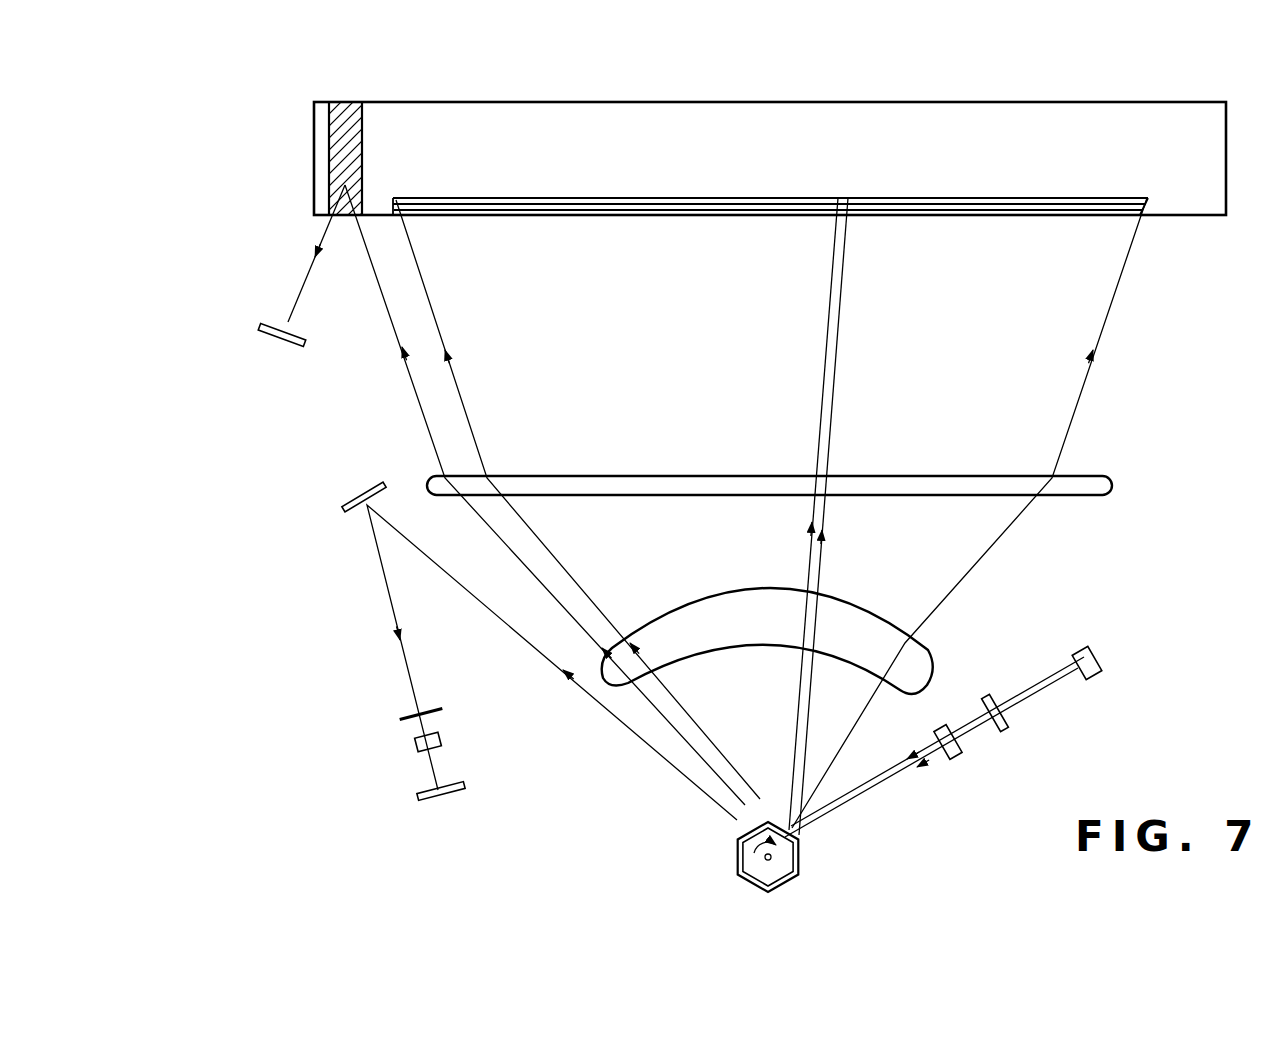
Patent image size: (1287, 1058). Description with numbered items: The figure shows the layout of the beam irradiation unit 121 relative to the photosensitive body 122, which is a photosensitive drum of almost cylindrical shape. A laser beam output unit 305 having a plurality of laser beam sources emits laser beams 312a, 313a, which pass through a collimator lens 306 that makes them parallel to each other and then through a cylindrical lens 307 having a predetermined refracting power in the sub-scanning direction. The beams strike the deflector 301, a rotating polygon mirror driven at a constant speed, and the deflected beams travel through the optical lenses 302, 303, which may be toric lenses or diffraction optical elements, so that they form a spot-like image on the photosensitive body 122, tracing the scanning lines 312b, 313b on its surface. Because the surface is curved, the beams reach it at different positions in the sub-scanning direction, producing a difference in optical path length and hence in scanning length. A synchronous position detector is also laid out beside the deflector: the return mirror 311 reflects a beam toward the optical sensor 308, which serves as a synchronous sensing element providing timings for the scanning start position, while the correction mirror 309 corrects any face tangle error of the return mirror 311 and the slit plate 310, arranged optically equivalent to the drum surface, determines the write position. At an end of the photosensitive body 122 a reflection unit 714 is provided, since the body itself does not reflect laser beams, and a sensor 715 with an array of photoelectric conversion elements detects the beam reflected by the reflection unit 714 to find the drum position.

The beam irradiation unit 121 is at (1160, 477).
The photosensitive body 122 is at (915, 120).
The deflector 301 is at (783, 862).
The optical lens 302 is at (688, 624).
The optical lens 303 is at (936, 475).
The laser beam output unit 305 is at (1100, 655).
The collimator lens 306 is at (1005, 728).
The cylindrical lens 307 is at (957, 758).
The optical sensor 308 is at (465, 797).
The correction mirror 309 is at (441, 740).
The slit plate 310 is at (406, 716).
The return mirror 311 is at (343, 500).
The laser beam 312a is at (833, 293).
The scanning line 312b is at (618, 200).
The laser beam 313a is at (838, 361).
The scanning line 313b is at (692, 210).
The reflection unit 714 is at (345, 100).
The sensor 715 is at (270, 340).